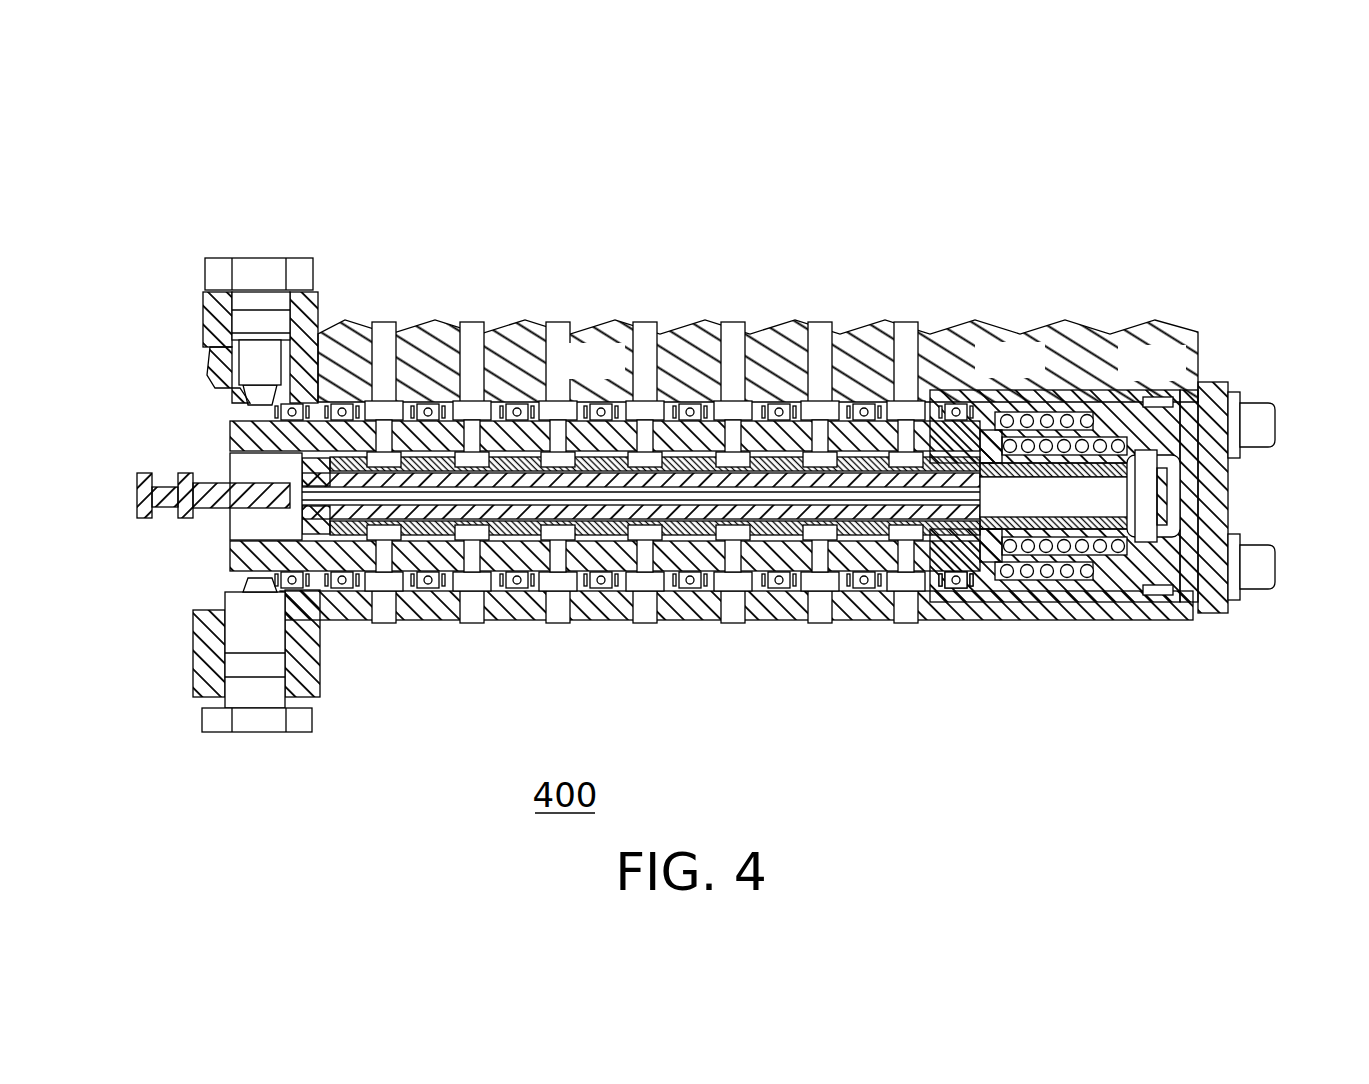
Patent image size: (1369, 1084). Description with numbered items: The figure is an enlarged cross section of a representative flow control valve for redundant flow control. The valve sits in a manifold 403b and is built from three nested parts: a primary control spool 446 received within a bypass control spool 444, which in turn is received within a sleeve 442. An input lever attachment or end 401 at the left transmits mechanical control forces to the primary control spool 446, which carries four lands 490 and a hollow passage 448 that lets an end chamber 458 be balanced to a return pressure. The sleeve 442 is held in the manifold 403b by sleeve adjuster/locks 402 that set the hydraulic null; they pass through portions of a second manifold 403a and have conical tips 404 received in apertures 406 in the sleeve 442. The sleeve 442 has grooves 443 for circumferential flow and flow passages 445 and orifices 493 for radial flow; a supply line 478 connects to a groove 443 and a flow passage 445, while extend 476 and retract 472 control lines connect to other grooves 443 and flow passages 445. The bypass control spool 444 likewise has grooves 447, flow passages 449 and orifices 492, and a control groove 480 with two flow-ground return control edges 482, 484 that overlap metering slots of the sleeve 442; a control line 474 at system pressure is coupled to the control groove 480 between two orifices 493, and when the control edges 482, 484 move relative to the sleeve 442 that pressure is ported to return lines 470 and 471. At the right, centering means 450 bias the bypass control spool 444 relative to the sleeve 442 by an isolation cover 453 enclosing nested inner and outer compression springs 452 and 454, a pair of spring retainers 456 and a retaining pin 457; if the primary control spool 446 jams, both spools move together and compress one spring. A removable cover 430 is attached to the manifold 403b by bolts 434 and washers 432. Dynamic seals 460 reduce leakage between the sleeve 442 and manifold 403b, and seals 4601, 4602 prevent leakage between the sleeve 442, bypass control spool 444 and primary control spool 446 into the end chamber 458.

The input lever attachment or end 401 is at (135, 494).
The sleeve adjuster/lock 402 is at (258, 258).
The second manifold 403a is at (205, 320).
The manifold 403b is at (330, 360).
The conical tip 404 is at (262, 600).
The aperture 406 is at (262, 582).
The removable cover 430 is at (1212, 382).
The washer 432 is at (1238, 392).
The bolt 434 is at (1272, 403).
The sleeve 442 is at (250, 420).
The groove 443 is at (795, 405).
The bypass control spool 444 is at (330, 527).
The flow passage 445 is at (680, 330).
The primary control spool 446 is at (520, 505).
The groove 447 is at (560, 590).
The hollow passage 448 is at (330, 468).
The flow passage 449 is at (655, 590).
The centering means 450 is at (1135, 490).
The inner compression spring 452 is at (1100, 446).
The isolation cover 453 is at (1075, 392).
The outer compression spring 454 is at (1100, 418).
The spring retainer 456 is at (1005, 548).
The retaining pin 457 is at (1185, 545).
The end chamber 458 is at (1015, 418).
The dynamic seal 460 is at (632, 405).
The dynamic seal 4601 is at (958, 590).
The dynamic seal 4602 is at (960, 548).
The return line 470 is at (382, 625).
The return line 471 is at (390, 332).
The retract control line 472 is at (830, 330).
The control line 474 is at (470, 400).
The extend control line 476 is at (645, 330).
The supply line 478 is at (735, 330).
The control groove 480 is at (500, 470).
The return control edge 482 is at (400, 445).
The return control edge 484 is at (520, 455).
The land 490 is at (1000, 462).
The orifice 492 is at (915, 435).
The orifice 493 is at (350, 415).